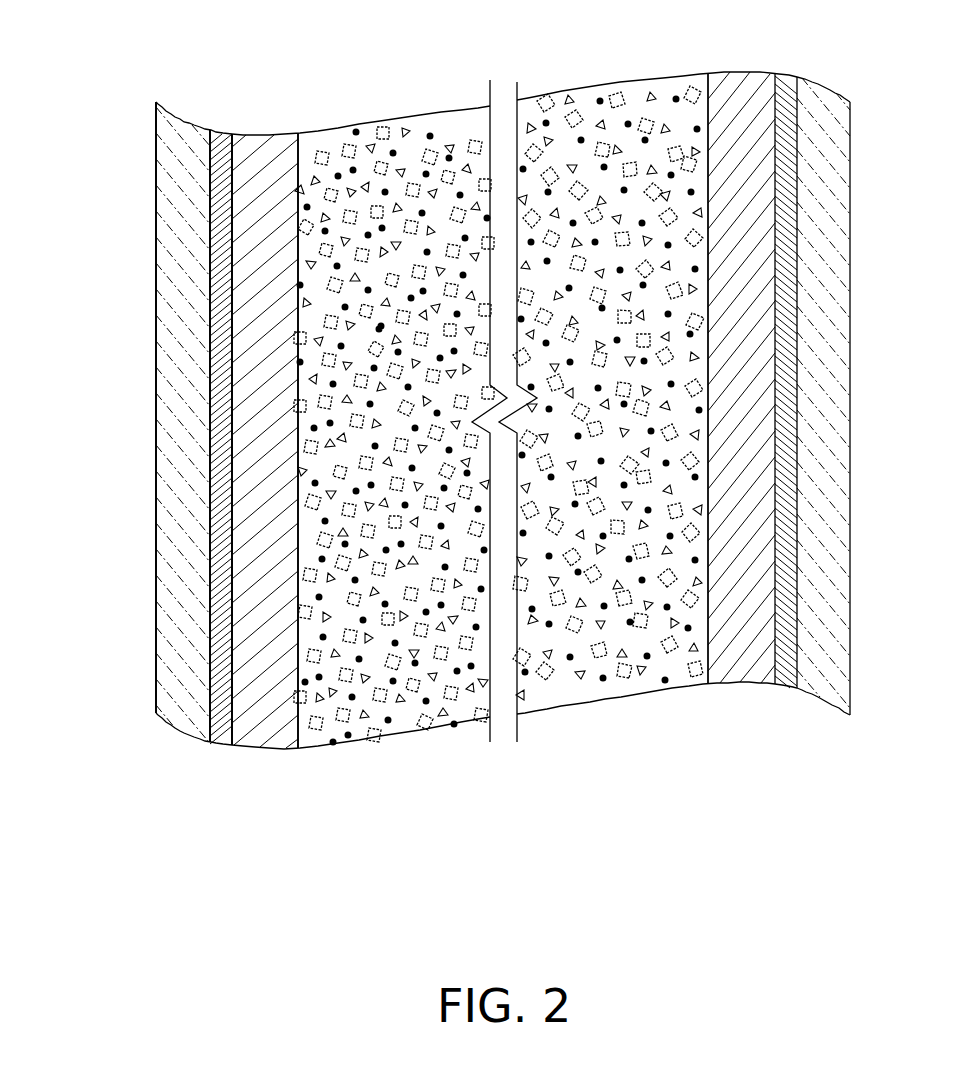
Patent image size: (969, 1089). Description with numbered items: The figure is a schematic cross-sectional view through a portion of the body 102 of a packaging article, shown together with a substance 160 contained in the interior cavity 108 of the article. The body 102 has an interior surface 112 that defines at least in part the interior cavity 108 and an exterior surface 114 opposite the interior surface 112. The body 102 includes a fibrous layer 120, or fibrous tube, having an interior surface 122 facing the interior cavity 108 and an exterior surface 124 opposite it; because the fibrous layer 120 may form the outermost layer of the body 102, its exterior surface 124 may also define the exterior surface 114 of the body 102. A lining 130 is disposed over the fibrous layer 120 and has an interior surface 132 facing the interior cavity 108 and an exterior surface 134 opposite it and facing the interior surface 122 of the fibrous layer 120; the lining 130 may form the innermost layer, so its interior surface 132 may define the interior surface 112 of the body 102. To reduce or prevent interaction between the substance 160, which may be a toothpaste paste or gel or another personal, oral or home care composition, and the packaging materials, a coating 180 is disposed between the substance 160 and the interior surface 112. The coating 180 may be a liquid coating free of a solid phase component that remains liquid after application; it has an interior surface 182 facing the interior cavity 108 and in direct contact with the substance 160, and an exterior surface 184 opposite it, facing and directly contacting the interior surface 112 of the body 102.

The body 102 is at (156, 197).
The interior cavity 108 is at (640, 125).
The interior surface 112 is at (230, 192).
The exterior surface 114 is at (156, 353).
The fibrous layer 120 is at (187, 383).
The interior surface 122 is at (230, 303).
The exterior surface 124 is at (156, 473).
The lining 130 is at (222, 610).
The interior surface 132 is at (230, 567).
The exterior surface 134 is at (210, 658).
The substance 160 is at (405, 160).
The coating 180 is at (275, 152).
The interior surface 182 is at (298, 148).
The exterior surface 184 is at (215, 135).